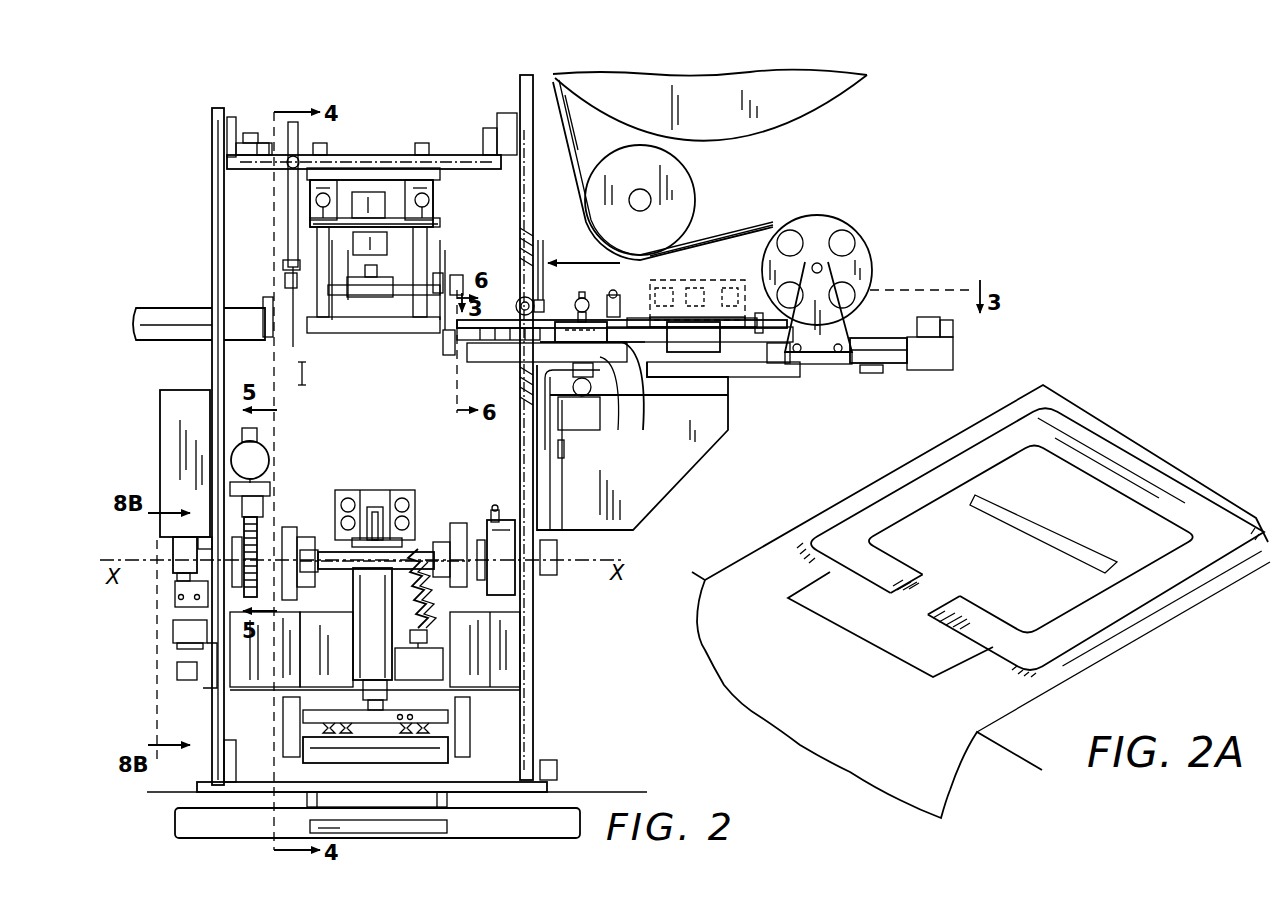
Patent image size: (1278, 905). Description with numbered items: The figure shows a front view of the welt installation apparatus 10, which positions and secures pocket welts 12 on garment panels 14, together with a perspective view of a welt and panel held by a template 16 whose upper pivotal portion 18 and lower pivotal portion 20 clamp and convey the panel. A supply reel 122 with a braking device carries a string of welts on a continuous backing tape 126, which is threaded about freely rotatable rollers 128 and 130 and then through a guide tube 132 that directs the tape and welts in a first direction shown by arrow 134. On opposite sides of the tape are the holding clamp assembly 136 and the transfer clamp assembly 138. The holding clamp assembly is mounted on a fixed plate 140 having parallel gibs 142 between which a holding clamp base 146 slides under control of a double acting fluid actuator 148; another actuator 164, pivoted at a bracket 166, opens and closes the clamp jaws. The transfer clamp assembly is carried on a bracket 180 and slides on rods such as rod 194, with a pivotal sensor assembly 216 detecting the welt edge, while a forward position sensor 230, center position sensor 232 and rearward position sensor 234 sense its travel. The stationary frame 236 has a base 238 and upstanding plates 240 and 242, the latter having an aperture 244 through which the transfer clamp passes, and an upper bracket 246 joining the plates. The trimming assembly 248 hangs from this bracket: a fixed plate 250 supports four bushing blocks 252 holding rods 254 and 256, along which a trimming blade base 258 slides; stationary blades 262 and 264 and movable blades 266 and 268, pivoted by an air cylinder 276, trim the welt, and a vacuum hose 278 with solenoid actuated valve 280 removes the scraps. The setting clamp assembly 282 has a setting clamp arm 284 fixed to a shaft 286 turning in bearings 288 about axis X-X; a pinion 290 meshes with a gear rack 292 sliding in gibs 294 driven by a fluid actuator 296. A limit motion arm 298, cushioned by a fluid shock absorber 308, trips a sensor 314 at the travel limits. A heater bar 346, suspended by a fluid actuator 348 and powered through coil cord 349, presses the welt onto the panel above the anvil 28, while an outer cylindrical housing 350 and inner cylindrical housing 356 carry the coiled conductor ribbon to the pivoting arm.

In FIG. 2, the apparatus 10 is at (648, 542).
In FIG. 2, the pocket welt 12 is at (575, 170).
In FIG. 2A, the pocket welt 12 is at (1062, 542).
In FIG. 2A, the garment panel 14 is at (980, 702).
In FIG. 2A, the template 16 is at (1170, 468).
In FIG. 2A, the upper pivotal portion 18 is at (1098, 614).
In FIG. 2A, the lower pivotal portion 20 is at (1085, 647).
In FIG. 2, the anvil 28 is at (455, 838).
In FIG. 2, the supply reel 122 is at (855, 85).
In FIG. 2, the backing tape 126 is at (578, 150).
In FIG. 2, the roller 128 is at (672, 205).
In FIG. 2, the roller 130 is at (870, 250).
In FIG. 2, the guide tube 132 is at (623, 344).
In FIG. 2, the arrow 134 is at (583, 255).
In FIG. 2, the holding clamp assembly 136 is at (515, 405).
In FIG. 2, the transfer clamp assembly 138 is at (513, 297).
In FIG. 2, the fixed plate 140 is at (585, 400).
In FIG. 2, the gibs 142 is at (555, 345).
In FIG. 2, the holding clamp base 146 is at (521, 384).
In FIG. 2, the double acting fluid actuator 148 is at (566, 432).
In FIG. 2, the double acting fluid actuator 164 is at (717, 253).
In FIG. 2, the bracket 166 is at (572, 318).
In FIG. 2, the bracket 180 is at (707, 457).
In FIG. 2, the rod 194 is at (902, 355).
In FIG. 2, the pivotal sensor assembly 216 is at (613, 292).
In FIG. 2, the forward position sensor 230 is at (694, 295).
In FIG. 2, the center position sensor 232 is at (700, 300).
In FIG. 2, the rearward position sensor 234 is at (738, 290).
In FIG. 2, the stationary frame 236 is at (210, 154).
In FIG. 2, the base 238 is at (560, 782).
In FIG. 2, the plate 240 is at (224, 740).
In FIG. 2, the plate 242 is at (537, 727).
In FIG. 2, the aperture 244 is at (557, 257).
In FIG. 2, the upper bracket 246 is at (397, 156).
In FIG. 2, the trimming assembly 248 is at (462, 253).
In FIG. 2, the fixed plate 250 is at (422, 170).
In FIG. 2, the bushing blocks 252 is at (316, 190).
In FIG. 2, the rod 254 is at (316, 200).
In FIG. 2, the rod 256 is at (429, 200).
In FIG. 2, the trimming blade base 258 is at (313, 224).
In FIG. 2, the stationary blade 262 is at (302, 340).
In FIG. 2, the stationary blade 264 is at (432, 343).
In FIG. 2, the movable blade 266 is at (292, 297).
In FIG. 2, the movable blade 268 is at (447, 257).
In FIG. 2, the air cylinder 276 is at (372, 192).
In FIG. 2, the vacuum hose 278 is at (157, 311).
In FIG. 2, the solenoid actuated valve 280 is at (267, 300).
In FIG. 2, the setting clamp assembly 282 is at (477, 717).
In FIG. 2, the setting clamp arm 284 is at (297, 613).
In FIG. 2, the shaft 286 is at (422, 557).
In FIG. 2, the bearings 288 is at (207, 542).
In FIG. 2, the pinion 290 is at (258, 540).
In FIG. 2, the gear rack 292 is at (270, 496).
In FIG. 2, the gibs 294 is at (263, 507).
In FIG. 2, the double acting fluid actuator 296 is at (252, 462).
In FIG. 2, the limit motion arm 298 is at (180, 547).
In FIG. 2, the fluid shock absorber 308 is at (180, 618).
In FIG. 2, the sensor 314 is at (182, 572).
In FIG. 2, the heater bar 346 is at (430, 750).
In FIG. 2, the double acting fluid actuator 348 is at (372, 633).
In FIG. 2, the coil cord 349 is at (444, 620).
In FIG. 2, the outer cylindrical housing 350 is at (502, 520).
In FIG. 2, the inner cylindrical housing 356 is at (488, 533).